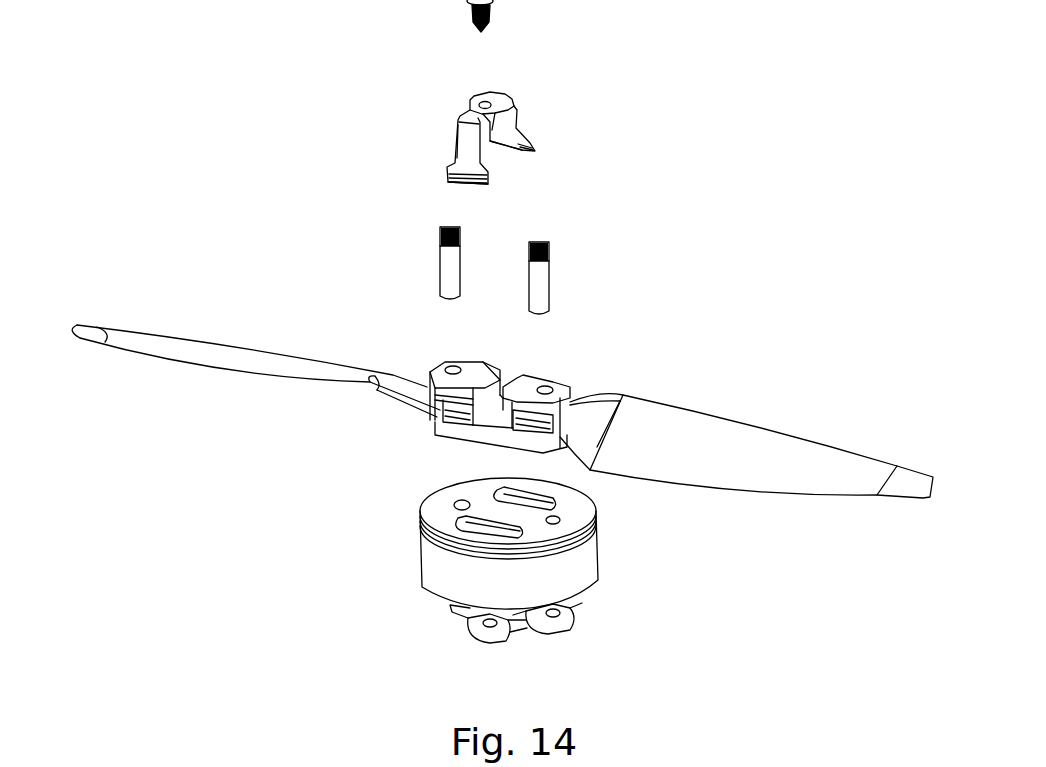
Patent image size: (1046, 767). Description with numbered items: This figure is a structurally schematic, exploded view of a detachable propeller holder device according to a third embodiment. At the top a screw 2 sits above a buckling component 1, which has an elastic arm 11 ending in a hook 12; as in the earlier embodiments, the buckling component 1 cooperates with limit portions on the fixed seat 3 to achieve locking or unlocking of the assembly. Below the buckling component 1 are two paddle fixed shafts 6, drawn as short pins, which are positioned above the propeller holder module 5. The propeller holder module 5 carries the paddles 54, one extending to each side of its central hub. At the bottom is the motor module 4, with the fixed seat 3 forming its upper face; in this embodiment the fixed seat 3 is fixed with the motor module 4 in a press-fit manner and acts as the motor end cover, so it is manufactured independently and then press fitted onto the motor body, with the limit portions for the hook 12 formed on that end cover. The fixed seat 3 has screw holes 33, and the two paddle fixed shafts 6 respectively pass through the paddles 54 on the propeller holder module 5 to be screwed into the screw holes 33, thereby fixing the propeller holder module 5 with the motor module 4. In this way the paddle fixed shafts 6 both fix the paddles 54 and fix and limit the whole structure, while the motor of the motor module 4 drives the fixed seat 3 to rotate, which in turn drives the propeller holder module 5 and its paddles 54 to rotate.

The buckling component 1 is at (507, 107).
The screw 2 is at (490, 10).
The fixed seat 3 is at (470, 523).
The motor module 4 is at (425, 563).
The propeller holder module 5 is at (548, 382).
The paddle fixed shaft 6 is at (530, 242).
The elastic arm 11 is at (465, 143).
The hook 12 is at (486, 176).
The screw hole 33 is at (557, 523).
The paddle 54 is at (710, 447).